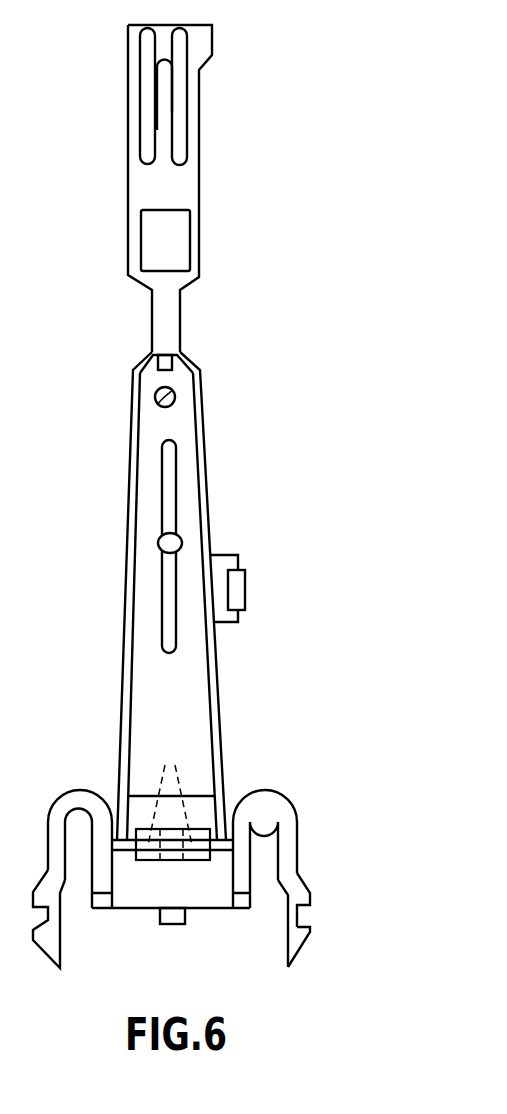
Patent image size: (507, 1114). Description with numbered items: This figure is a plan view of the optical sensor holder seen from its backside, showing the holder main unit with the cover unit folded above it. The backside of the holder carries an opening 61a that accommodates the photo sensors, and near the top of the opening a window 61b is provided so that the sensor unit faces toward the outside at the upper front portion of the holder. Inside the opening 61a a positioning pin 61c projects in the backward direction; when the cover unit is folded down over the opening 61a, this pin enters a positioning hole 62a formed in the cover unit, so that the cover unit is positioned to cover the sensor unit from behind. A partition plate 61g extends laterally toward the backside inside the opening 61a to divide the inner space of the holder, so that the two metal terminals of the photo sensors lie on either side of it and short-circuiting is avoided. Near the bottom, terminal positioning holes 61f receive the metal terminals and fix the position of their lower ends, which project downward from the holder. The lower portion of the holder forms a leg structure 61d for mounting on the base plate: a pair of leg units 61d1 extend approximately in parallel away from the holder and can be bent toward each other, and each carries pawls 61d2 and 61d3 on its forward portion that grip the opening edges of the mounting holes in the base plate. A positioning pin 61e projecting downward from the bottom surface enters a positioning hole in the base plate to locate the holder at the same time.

The positioning hole 62a is at (168, 122).
The opening 61a is at (140, 433).
The window 61b is at (175, 395).
The positioning pin 61c is at (181, 537).
The partition plate 61g is at (175, 642).
The terminal positioning hole 61f is at (173, 797).
The leg structure 61d is at (265, 867).
The leg unit 61d1 is at (297, 822).
The pawl 61d2 is at (308, 888).
The pawl 61d3 is at (337, 947).
The positioning pin 61e is at (185, 915).